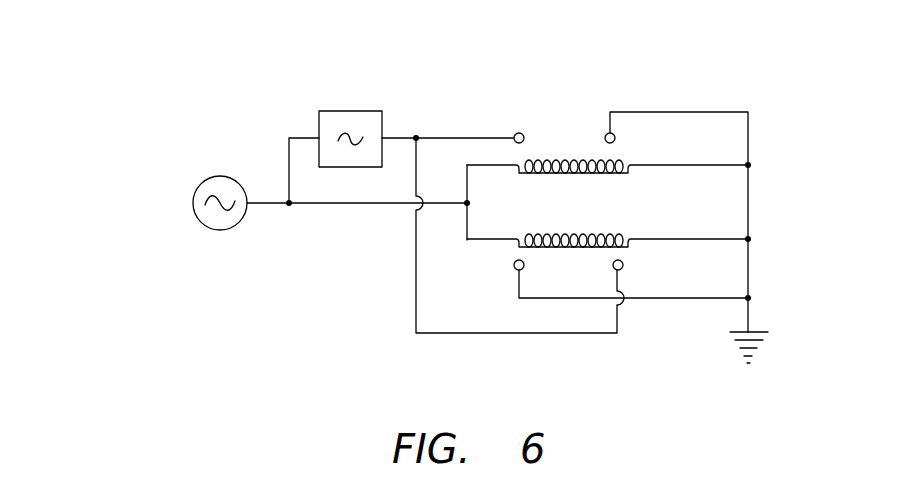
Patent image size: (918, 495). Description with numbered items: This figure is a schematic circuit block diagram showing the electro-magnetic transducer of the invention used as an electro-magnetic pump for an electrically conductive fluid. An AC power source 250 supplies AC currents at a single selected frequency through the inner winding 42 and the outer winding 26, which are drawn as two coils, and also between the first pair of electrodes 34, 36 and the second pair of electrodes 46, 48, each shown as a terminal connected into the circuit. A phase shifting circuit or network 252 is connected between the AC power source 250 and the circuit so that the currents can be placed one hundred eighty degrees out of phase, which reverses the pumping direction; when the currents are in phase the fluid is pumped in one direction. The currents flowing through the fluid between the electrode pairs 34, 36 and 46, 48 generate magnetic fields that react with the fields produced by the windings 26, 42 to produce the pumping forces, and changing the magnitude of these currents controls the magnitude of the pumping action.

The AC power source 250 is at (203, 178).
The phase shifting circuit or network 252 is at (358, 111).
The first pair electrode 34 is at (519, 133).
The second pair electrode 46 is at (616, 137).
The outer winding 26 is at (605, 173).
The inner winding 42 is at (562, 233).
The first pair electrode 36 is at (514, 265).
The second pair electrode 48 is at (623, 265).